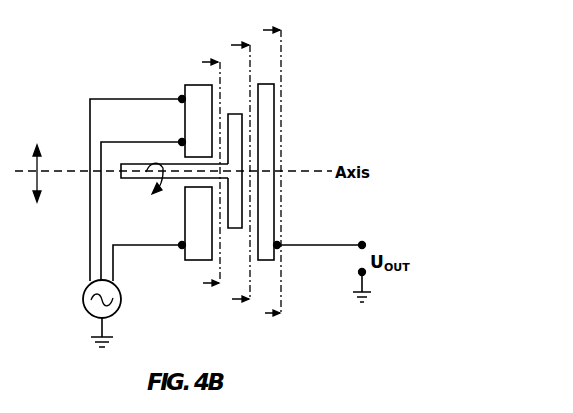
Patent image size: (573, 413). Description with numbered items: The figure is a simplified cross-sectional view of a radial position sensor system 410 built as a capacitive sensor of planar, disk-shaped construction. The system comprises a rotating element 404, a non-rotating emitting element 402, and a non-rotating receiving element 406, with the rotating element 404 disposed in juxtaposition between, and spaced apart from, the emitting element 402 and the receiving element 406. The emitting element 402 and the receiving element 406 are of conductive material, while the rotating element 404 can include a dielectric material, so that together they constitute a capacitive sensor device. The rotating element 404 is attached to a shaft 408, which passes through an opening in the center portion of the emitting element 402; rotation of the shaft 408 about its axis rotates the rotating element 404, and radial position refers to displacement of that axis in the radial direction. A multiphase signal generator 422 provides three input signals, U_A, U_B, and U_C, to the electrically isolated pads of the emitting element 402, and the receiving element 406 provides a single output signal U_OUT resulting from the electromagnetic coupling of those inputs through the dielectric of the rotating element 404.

The non-rotating emitting element 402 is at (185, 197).
The rotating element 404 is at (232, 228).
The non-rotating receiving element 406 is at (276, 227).
The shaft 408 is at (141, 164).
The radial position sensor system 410 is at (313, 48).
The multiphase signal generator 422 is at (82, 300).